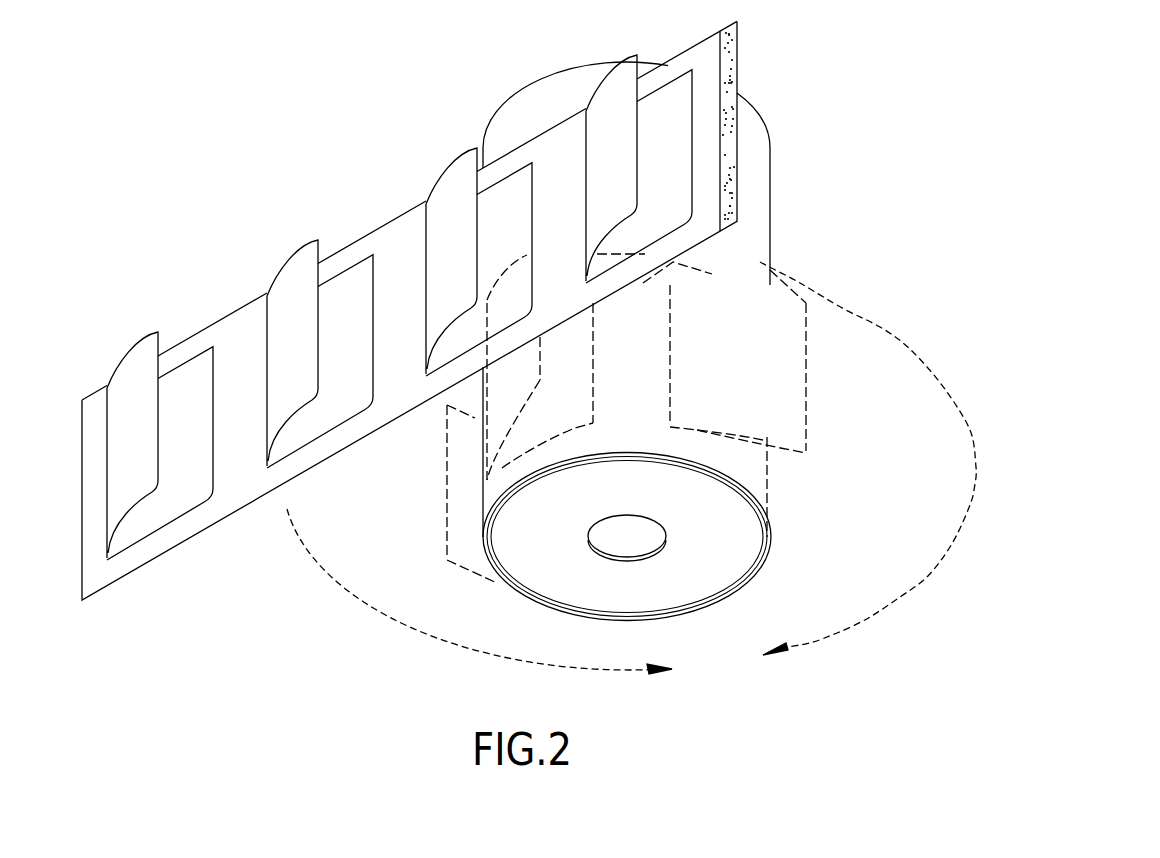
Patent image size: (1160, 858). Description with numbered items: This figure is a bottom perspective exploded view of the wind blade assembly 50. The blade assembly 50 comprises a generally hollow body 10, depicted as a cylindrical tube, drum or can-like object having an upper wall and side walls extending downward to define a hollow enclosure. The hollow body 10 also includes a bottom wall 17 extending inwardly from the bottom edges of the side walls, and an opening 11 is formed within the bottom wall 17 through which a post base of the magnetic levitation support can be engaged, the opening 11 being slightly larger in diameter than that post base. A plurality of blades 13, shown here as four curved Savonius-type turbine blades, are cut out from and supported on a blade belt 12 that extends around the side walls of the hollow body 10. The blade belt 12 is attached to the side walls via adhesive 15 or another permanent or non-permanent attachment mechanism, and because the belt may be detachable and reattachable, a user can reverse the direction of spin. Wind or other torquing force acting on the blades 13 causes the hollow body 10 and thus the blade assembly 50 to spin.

The wind blade assembly 50 is at (301, 166).
The hollow body 10 is at (522, 99).
The opening 11 is at (665, 547).
The blade belt 12 is at (398, 232).
The blades 13 is at (135, 357).
The adhesive 15 is at (733, 55).
The bottom wall 17 is at (660, 600).